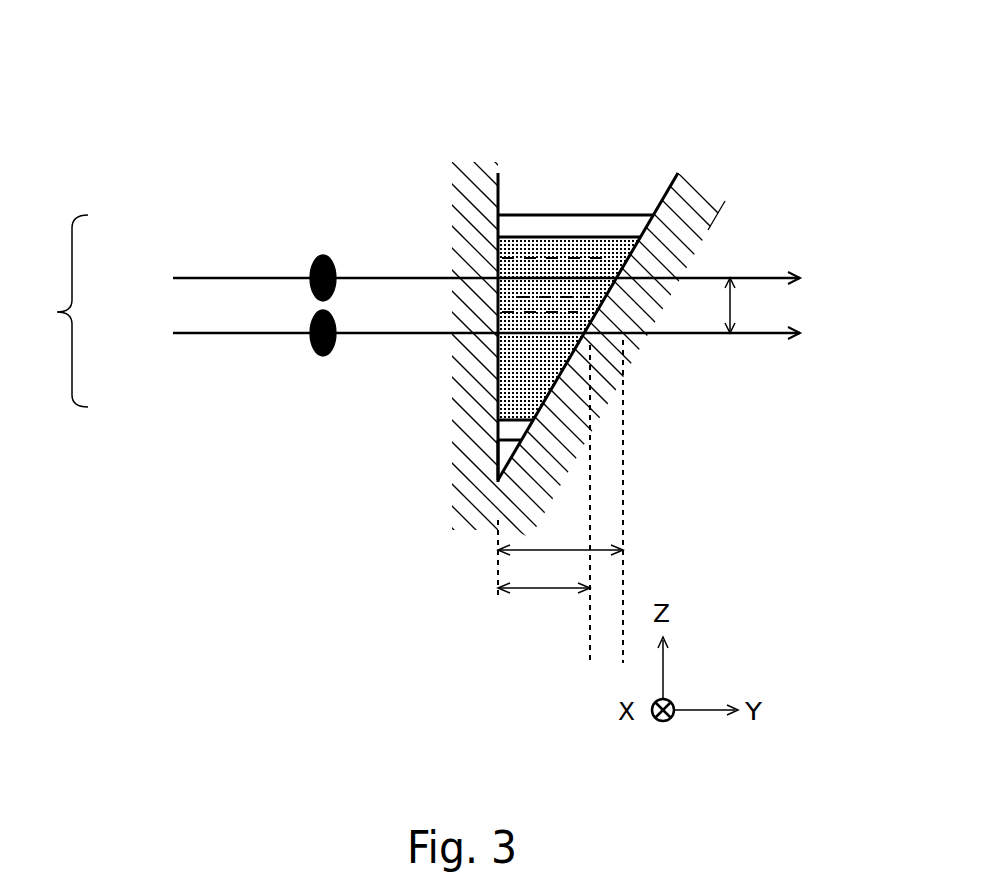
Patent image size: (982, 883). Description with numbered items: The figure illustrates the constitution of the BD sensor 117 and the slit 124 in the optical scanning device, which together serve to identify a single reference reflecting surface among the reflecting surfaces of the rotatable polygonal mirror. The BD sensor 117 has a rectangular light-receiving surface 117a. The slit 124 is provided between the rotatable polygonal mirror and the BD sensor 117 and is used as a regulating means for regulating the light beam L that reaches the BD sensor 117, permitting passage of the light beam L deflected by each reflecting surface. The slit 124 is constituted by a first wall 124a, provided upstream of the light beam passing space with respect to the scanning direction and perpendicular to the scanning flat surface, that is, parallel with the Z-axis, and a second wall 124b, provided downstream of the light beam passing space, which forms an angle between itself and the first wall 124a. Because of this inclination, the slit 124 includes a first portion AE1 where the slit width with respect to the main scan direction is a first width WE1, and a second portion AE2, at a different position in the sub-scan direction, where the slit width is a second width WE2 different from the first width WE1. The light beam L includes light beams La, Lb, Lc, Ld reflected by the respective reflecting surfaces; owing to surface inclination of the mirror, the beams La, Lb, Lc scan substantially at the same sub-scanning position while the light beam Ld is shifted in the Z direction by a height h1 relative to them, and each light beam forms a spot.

The slit 124 is at (637, 390).
The first wall 124a is at (498, 183).
The second wall 124b is at (672, 188).
The BD sensor 117 is at (543, 200).
The light-receiving surface 117a is at (577, 247).
The first portion AE1 is at (583, 358).
The second portion AE2 is at (726, 208).
The height h1 is at (743, 295).
The first width WE1 is at (544, 504).
The second width WE2 is at (560, 501).
The light beam L is at (62, 311).
The light beam Ld is at (173, 275).
The light beam La is at (220, 333).
The light beam Lc is at (700, 333).